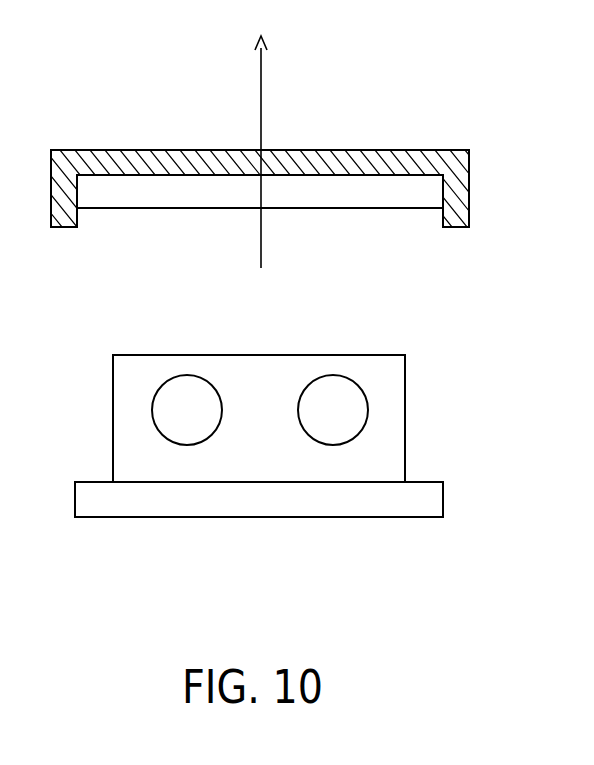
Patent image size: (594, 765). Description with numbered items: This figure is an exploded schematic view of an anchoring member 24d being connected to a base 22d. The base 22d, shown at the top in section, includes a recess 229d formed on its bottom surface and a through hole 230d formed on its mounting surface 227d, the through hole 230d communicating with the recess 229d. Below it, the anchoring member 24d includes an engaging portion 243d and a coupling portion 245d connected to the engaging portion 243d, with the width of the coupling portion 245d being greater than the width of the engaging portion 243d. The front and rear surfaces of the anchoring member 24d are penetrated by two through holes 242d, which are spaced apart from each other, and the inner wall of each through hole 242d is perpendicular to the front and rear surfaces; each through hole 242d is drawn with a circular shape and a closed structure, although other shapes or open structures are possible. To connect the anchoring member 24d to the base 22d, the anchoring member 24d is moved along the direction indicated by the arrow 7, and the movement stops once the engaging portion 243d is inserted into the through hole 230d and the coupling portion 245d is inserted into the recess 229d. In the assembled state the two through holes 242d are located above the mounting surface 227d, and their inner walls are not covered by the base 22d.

The arrow 7 is at (261, 70).
The base 22d is at (283, 179).
The mounting surface 227d is at (433, 150).
The recess 229d is at (403, 182).
The through hole 230d is at (166, 168).
The anchoring member 24d is at (296, 436).
The through holes 242d is at (186, 406).
The engaging portion 243d is at (380, 383).
The coupling portion 245d is at (263, 500).